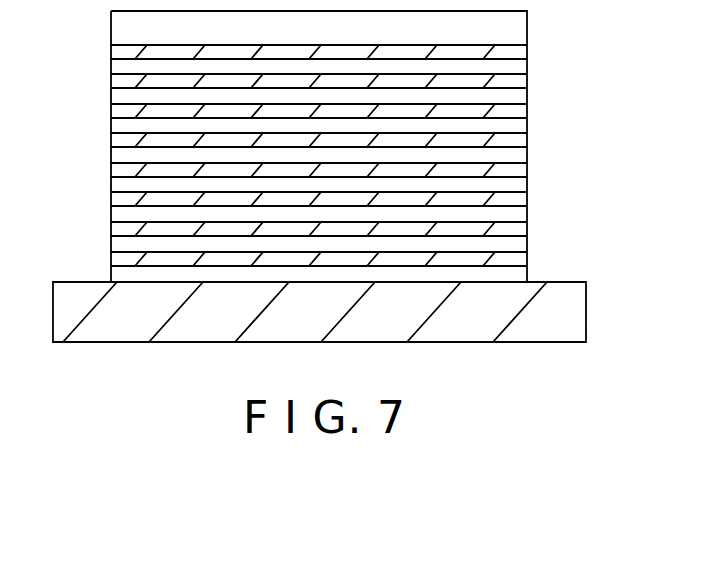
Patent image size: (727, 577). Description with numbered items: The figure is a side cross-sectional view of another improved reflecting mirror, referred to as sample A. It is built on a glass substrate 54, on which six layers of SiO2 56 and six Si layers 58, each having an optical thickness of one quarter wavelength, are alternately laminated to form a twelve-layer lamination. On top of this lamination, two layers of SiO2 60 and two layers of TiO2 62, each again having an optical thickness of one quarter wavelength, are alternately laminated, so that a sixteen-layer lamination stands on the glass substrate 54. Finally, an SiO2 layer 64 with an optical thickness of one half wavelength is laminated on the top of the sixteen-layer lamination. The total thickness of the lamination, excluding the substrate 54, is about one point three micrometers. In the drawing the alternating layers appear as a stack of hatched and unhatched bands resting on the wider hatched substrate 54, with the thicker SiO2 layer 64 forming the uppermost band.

The glass substrate 54 is at (577, 318).
The SiO2 layer 56 is at (556, 259).
The Si layer 58 is at (557, 227).
The SiO2 layer 60 is at (110, 98).
The TiO2 layer 62 is at (110, 83).
The SiO2 layer 64 is at (518, 31).